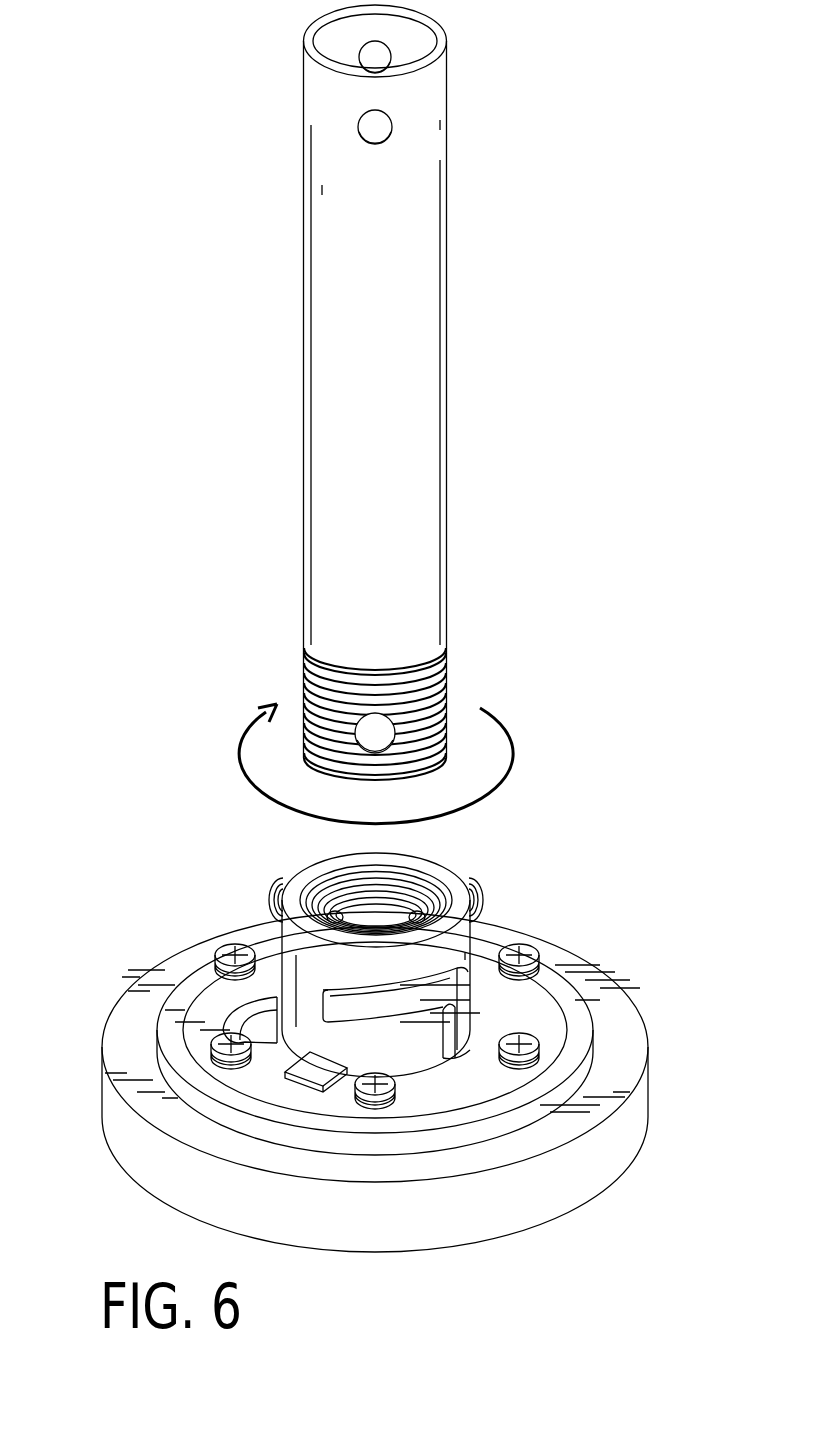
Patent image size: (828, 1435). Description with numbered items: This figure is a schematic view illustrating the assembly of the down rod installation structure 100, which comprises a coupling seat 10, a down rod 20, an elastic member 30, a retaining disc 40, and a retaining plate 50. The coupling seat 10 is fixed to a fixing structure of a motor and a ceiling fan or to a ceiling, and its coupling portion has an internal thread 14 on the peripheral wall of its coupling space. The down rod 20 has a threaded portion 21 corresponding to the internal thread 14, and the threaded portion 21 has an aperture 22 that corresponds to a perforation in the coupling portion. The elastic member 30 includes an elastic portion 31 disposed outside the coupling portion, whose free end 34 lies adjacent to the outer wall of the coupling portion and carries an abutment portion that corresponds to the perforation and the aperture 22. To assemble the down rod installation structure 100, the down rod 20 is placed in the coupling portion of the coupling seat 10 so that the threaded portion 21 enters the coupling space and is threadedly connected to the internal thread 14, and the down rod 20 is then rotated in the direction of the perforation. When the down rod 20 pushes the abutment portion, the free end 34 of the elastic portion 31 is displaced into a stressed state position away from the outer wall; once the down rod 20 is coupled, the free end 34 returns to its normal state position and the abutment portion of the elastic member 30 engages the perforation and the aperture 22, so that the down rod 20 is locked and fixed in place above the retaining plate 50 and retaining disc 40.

The down rod installation structure 100 is at (573, 214).
The down rod 20 is at (447, 390).
The threaded portion 21 is at (445, 672).
The aperture 22 is at (372, 729).
The retaining disc 40 is at (647, 1015).
The retaining plate 50 is at (572, 1012).
The coupling seat 10 is at (276, 922).
The internal thread 14 is at (392, 896).
The elastic member 30 is at (322, 1006).
The elastic portion 31 is at (460, 1043).
The free end 34 is at (395, 1008).